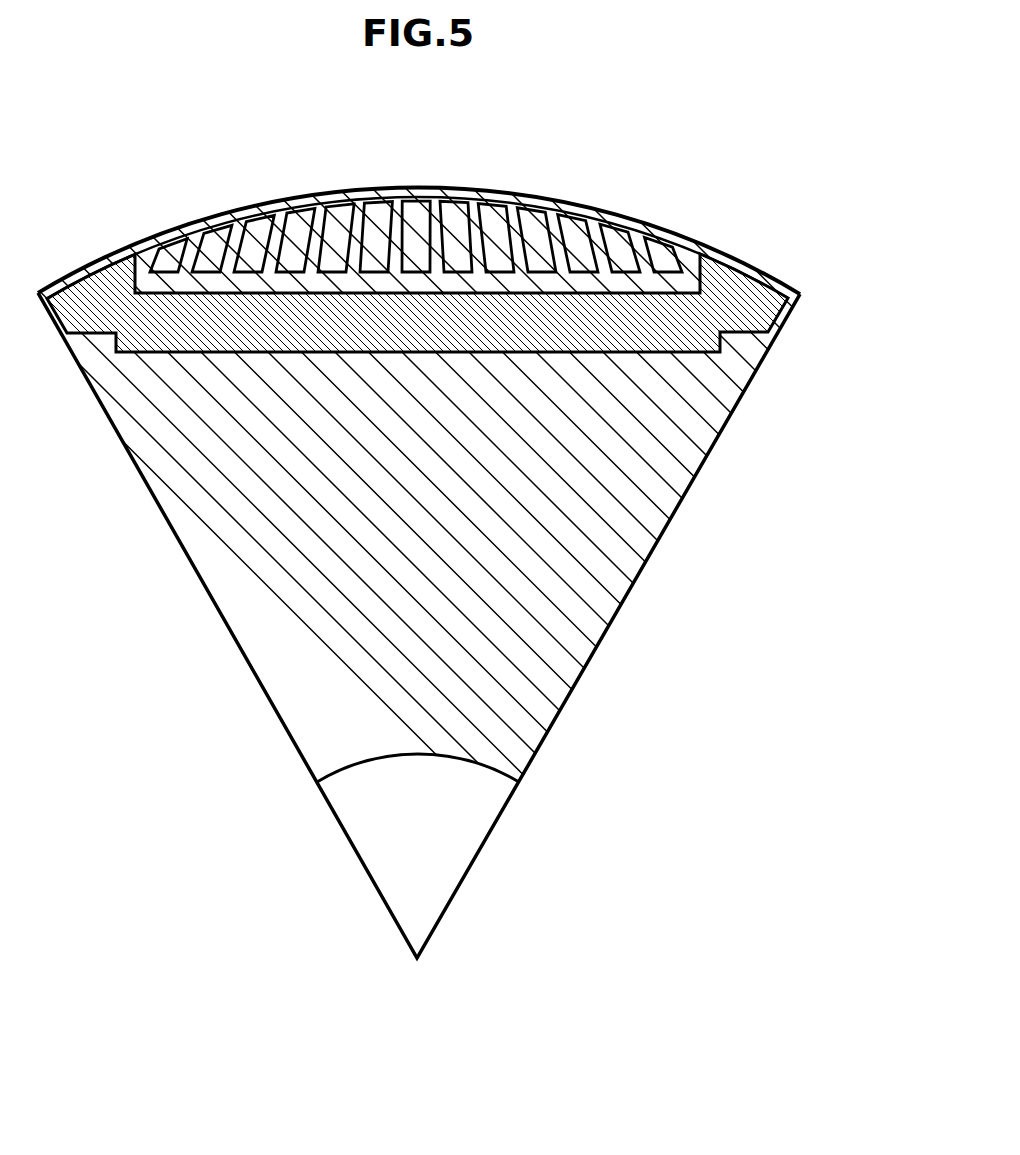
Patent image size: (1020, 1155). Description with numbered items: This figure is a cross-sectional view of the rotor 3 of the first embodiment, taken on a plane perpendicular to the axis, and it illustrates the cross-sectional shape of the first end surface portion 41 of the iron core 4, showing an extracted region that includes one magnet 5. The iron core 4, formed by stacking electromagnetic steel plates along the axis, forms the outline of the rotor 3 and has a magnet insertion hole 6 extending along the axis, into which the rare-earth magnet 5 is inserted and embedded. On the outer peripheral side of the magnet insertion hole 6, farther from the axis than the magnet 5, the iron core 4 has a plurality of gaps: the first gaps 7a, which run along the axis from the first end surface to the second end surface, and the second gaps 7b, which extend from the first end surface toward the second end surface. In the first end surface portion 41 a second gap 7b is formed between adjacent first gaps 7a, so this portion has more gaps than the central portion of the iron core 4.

The rotor 3 is at (585, 142).
The iron core 4 is at (768, 340).
The first end surface portion 41 is at (600, 610).
The magnet 5 is at (91, 280).
The magnet insertion hole 6 is at (752, 282).
The first gap 7a is at (172, 248).
The second gap 7b is at (222, 245).